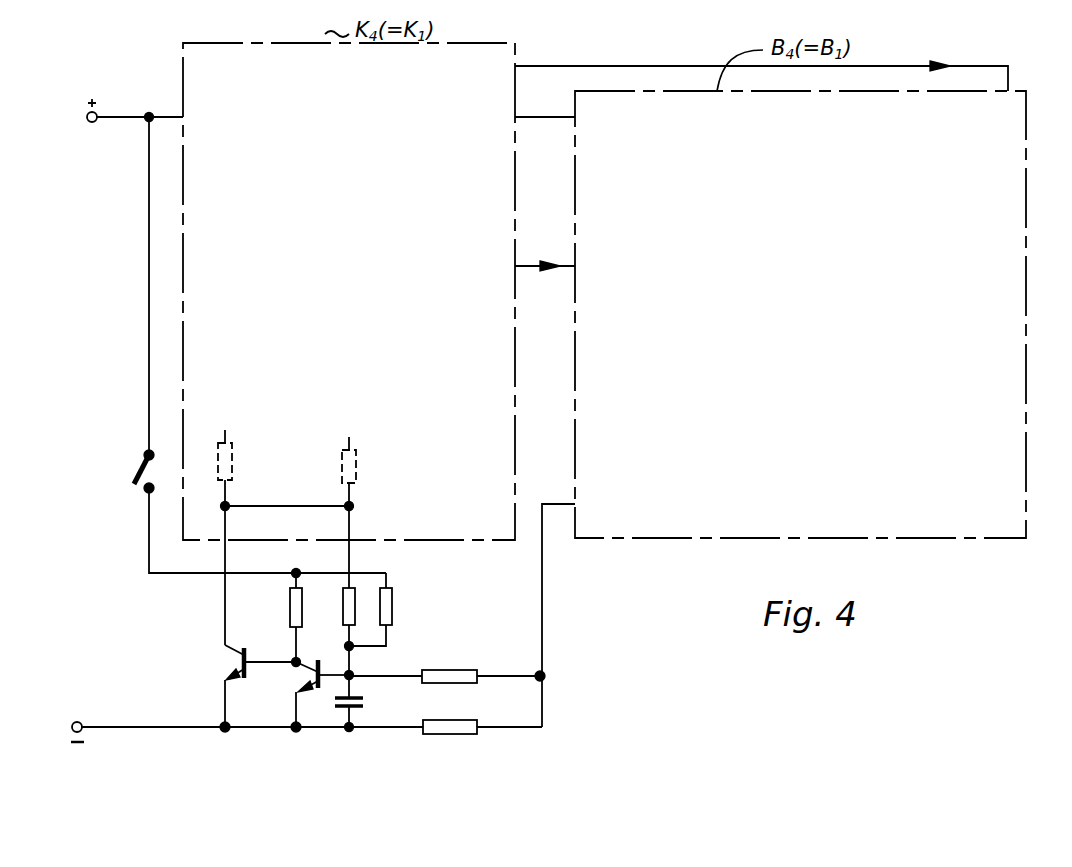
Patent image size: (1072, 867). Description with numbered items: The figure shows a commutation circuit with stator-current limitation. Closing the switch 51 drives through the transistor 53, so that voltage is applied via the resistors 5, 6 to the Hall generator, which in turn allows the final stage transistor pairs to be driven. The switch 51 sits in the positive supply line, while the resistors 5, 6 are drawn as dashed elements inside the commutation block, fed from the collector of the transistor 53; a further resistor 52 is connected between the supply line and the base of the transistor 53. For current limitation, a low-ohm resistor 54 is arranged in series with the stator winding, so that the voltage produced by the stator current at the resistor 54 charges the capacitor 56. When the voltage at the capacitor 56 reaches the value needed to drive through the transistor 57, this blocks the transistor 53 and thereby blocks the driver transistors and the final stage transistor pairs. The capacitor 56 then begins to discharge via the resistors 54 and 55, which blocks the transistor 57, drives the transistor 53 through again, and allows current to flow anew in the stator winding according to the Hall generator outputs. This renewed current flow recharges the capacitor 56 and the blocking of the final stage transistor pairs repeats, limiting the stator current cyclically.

The resistor 5 is at (232, 466).
The resistor 6 is at (356, 474).
The switch 51 is at (142, 465).
The resistor 52 is at (290, 613).
The transistor 53 is at (230, 662).
The low-ohm resistor 54 is at (432, 725).
The resistor 55 is at (432, 674).
The capacitor 56 is at (370, 698).
The transistor 57 is at (304, 679).